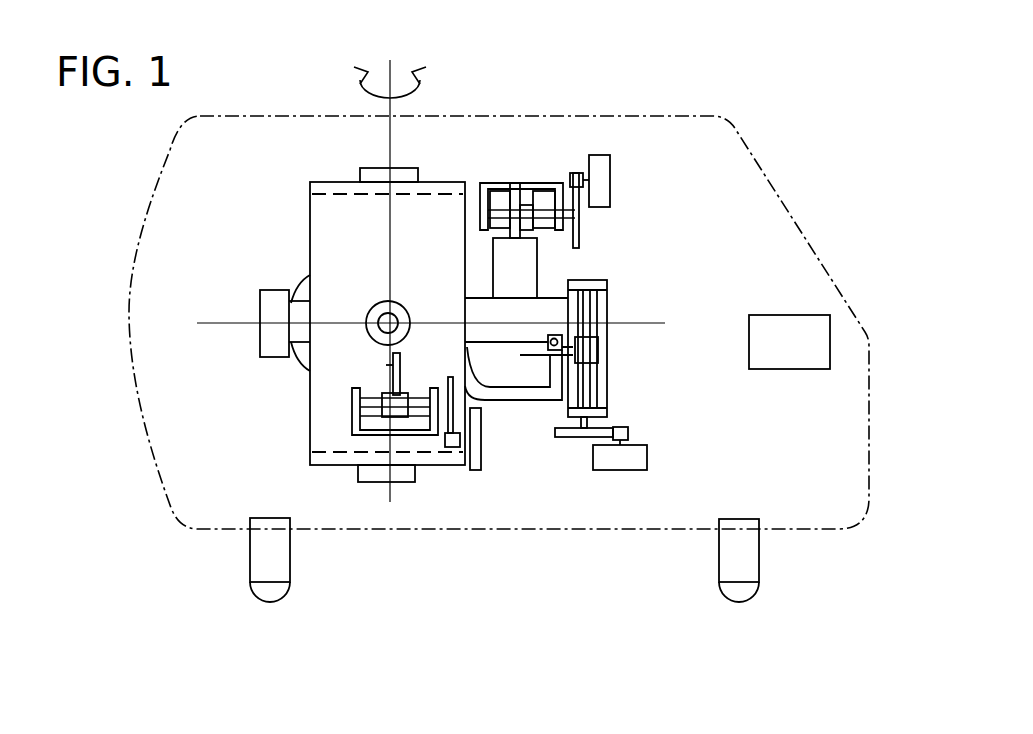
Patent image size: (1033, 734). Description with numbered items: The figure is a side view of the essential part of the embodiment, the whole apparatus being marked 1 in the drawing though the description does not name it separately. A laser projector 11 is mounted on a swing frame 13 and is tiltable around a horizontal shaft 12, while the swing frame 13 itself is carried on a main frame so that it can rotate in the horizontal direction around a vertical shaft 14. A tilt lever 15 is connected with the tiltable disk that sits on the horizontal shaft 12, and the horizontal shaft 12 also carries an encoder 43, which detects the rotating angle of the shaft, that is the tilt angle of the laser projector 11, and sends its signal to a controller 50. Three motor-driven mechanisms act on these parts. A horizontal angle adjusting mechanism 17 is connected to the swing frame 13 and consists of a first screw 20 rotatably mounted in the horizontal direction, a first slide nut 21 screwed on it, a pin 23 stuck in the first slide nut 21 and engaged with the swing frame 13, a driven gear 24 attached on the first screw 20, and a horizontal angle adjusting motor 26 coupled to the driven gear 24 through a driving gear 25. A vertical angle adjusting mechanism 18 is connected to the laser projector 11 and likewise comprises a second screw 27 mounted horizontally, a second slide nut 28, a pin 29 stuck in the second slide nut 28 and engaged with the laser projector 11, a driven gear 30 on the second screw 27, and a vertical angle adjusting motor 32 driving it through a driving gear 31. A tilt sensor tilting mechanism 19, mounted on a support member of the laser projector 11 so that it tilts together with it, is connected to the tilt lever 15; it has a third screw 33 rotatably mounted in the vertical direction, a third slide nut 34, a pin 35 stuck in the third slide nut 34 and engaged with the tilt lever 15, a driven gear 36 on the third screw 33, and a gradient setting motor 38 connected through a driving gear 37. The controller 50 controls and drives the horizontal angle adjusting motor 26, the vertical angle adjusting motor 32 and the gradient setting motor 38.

The machine body outline 1 is at (834, 282).
The laser projector 11 is at (300, 280).
The horizontal shaft 12 is at (404, 307).
The swing frame 13 is at (308, 207).
The vertical shaft 14 is at (398, 170).
The tilt lever 15 is at (537, 403).
The horizontal angle adjusting mechanism 17 is at (336, 408).
The vertical angle adjusting mechanism 18 is at (490, 168).
The tilt sensor tilting mechanism 19 is at (626, 403).
The first screw 20 is at (367, 414).
The first slide nut 21 is at (398, 402).
The pin 23 is at (400, 381).
The driven gear 24 is at (527, 401).
The driving gear 25 is at (440, 448).
The horizontal angle adjusting motor 26 is at (475, 466).
The second screw 27 is at (499, 204).
The second slide nut 28 is at (528, 206).
The pin 29 is at (536, 228).
The driven gear 30 is at (582, 232).
The driving gear 31 is at (576, 175).
The vertical angle adjusting motor 32 is at (599, 180).
The third screw 33 is at (593, 303).
The third slide nut 34 is at (588, 352).
The pin 35 is at (561, 402).
The driven gear 36 is at (573, 438).
The driving gear 37 is at (628, 432).
The gradient setting motor 38 is at (627, 458).
The encoder 43 is at (305, 283).
The controller 50 is at (830, 345).